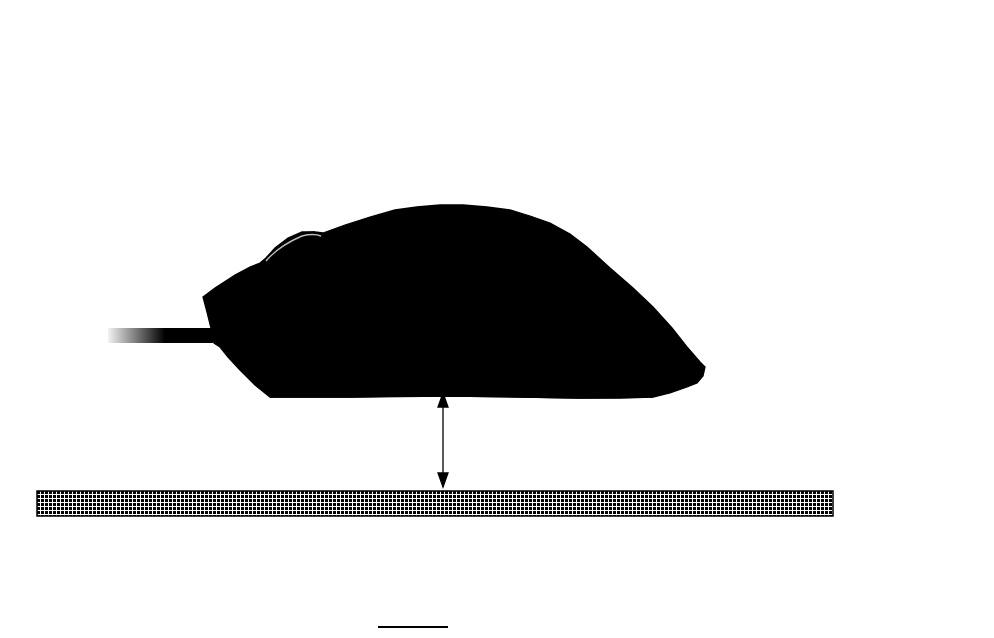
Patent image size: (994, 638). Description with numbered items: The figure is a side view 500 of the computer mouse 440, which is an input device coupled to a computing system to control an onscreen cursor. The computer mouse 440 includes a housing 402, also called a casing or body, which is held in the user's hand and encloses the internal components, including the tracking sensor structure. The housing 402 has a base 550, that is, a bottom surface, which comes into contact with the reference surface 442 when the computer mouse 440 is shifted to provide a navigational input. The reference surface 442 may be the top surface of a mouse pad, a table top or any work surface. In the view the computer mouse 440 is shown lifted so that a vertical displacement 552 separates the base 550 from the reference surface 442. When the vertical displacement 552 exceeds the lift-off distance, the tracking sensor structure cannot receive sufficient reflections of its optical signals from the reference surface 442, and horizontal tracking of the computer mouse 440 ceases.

The side view 500 is at (720, 108).
The computer mouse 440 is at (665, 244).
The housing 402 is at (370, 217).
The base 550 is at (377, 393).
The reference surface 442 is at (797, 492).
The vertical displacement 552 is at (462, 434).